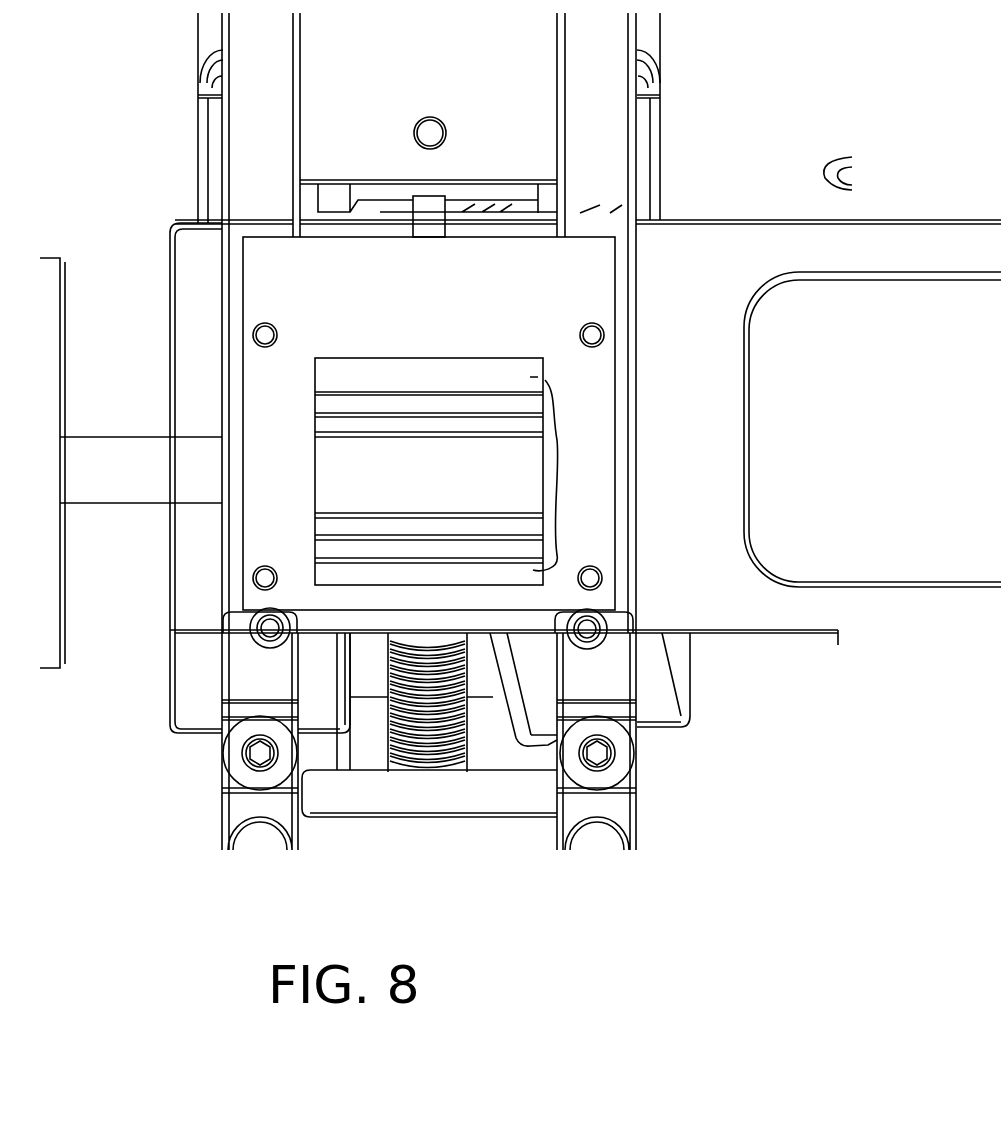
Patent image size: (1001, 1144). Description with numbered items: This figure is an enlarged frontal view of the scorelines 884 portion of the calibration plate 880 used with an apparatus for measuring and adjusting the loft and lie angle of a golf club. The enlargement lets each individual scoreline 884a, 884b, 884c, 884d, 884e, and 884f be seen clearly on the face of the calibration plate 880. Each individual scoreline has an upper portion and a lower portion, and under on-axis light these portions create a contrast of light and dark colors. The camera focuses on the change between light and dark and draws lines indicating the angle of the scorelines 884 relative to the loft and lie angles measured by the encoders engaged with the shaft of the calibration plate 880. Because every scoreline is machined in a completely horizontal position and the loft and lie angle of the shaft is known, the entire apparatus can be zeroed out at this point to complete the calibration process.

The calibration plate 880 is at (748, 642).
The scorelines 884 is at (407, 594).
The first individual scoreline 884a is at (348, 390).
The second individual scoreline 884b is at (402, 412).
The third individual scoreline 884c is at (490, 430).
The fourth individual scoreline 884d is at (337, 520).
The fifth individual scoreline 884e is at (353, 538).
The sixth individual scoreline 884f is at (380, 563).